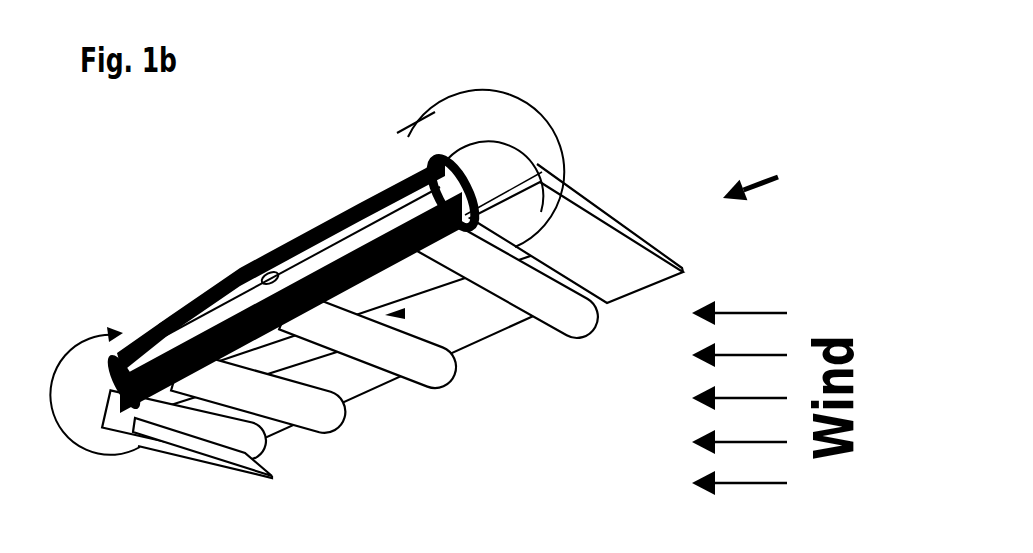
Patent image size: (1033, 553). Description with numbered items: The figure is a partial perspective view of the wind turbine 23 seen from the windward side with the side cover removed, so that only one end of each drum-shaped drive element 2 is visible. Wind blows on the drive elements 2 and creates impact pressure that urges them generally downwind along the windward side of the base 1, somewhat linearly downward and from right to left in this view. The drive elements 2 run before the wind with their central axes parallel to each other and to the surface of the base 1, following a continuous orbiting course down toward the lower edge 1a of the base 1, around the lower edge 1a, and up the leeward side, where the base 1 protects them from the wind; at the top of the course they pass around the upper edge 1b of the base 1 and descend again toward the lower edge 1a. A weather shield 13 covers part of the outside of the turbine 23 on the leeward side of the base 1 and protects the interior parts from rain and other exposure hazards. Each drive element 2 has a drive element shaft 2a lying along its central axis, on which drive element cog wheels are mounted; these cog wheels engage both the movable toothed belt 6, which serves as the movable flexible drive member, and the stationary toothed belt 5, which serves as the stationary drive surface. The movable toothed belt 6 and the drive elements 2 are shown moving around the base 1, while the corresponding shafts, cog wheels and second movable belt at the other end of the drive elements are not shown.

The base 1 is at (257, 303).
The lower edge 1a is at (137, 373).
The upper edge 1b is at (428, 217).
The drive element 2 is at (520, 290).
The drive element shaft 2a is at (383, 193).
The stationary toothed belt 5 is at (352, 240).
The movable toothed belt 6 is at (453, 167).
The weather shield 13 is at (593, 193).
The wind turbine 23 is at (785, 172).